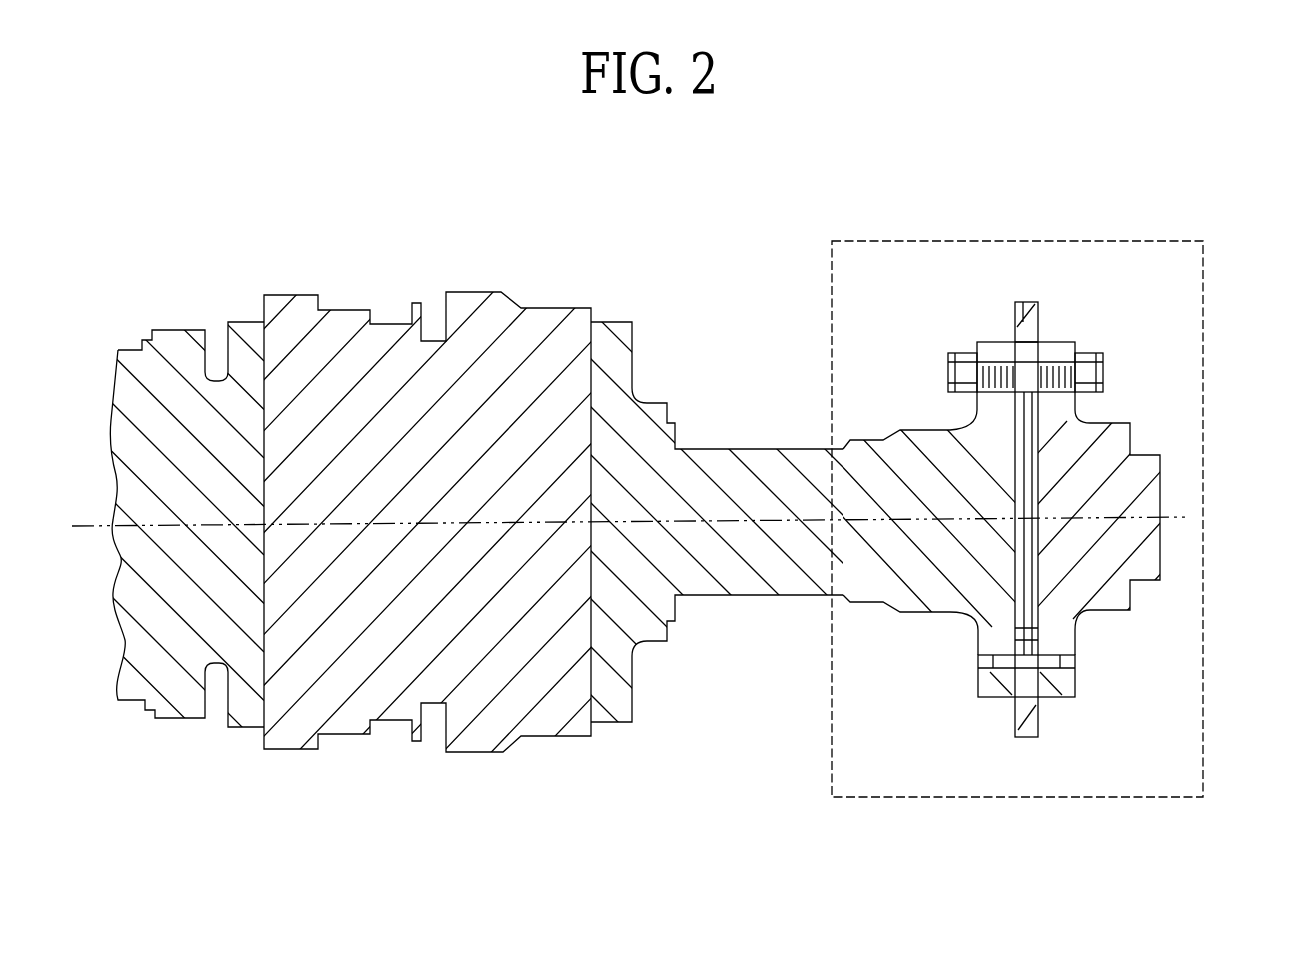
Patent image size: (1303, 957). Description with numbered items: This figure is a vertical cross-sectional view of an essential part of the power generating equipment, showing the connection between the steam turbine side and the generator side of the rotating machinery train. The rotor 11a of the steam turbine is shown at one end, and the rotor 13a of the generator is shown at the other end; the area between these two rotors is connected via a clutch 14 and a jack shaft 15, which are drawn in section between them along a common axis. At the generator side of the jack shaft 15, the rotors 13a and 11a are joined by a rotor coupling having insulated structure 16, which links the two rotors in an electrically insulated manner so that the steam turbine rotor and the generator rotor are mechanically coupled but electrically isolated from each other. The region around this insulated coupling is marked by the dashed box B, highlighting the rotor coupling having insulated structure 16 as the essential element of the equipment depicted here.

The rotor of the steam turbine 11a is at (183, 330).
The clutch 14 is at (474, 292).
The jack shaft 15 is at (743, 449).
The rotor of the generator 13a is at (1150, 455).
The rotor coupling having insulated structure 16 is at (1049, 315).
The region B is at (1203, 327).